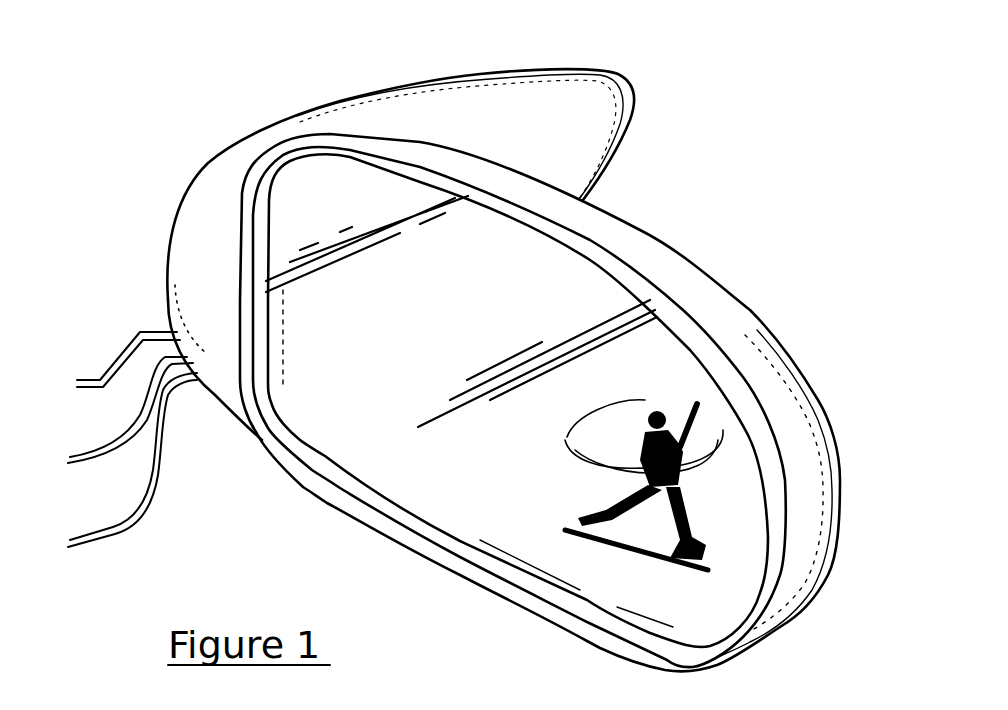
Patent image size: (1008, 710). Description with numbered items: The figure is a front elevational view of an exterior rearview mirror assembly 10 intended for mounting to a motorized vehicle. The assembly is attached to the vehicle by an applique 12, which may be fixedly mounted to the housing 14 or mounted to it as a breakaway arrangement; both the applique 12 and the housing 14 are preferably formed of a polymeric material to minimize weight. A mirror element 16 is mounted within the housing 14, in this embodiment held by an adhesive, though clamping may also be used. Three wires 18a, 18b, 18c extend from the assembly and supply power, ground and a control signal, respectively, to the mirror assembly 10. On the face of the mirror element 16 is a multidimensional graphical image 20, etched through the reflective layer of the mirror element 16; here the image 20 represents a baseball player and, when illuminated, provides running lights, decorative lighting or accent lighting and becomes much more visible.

The exterior rearview mirror assembly 10 is at (469, 354).
The applique 12 is at (546, 106).
The housing 14 is at (807, 458).
The mirror element 16 is at (357, 421).
The wire 18a is at (82, 380).
The wire 18b is at (83, 453).
The wire 18c is at (87, 528).
The multidimensional graphical image 20 is at (633, 553).